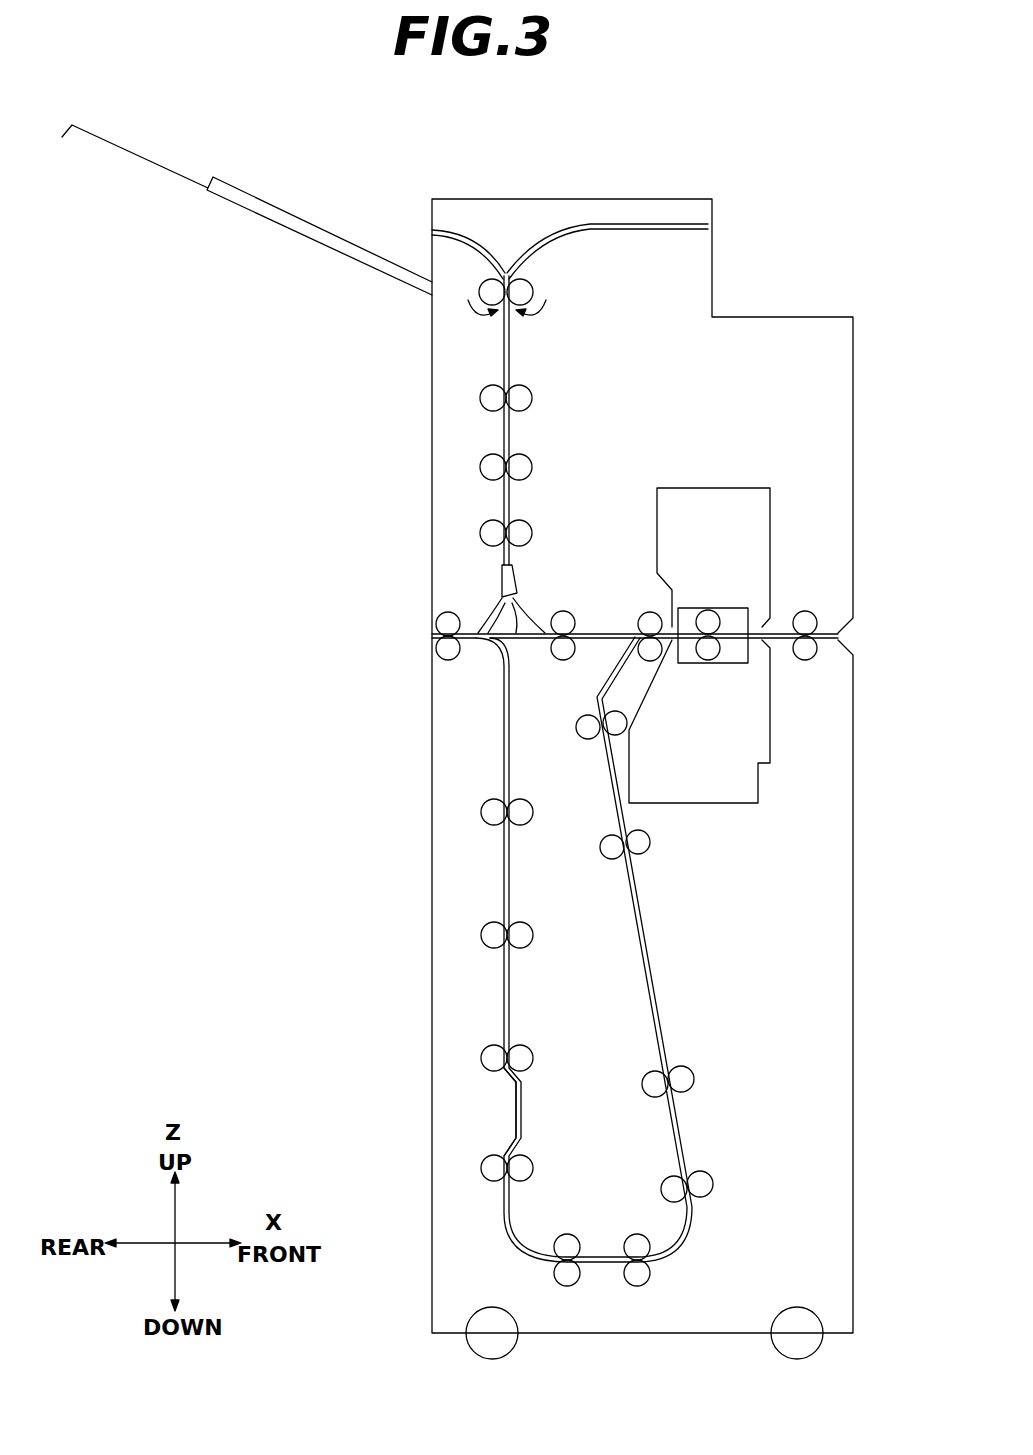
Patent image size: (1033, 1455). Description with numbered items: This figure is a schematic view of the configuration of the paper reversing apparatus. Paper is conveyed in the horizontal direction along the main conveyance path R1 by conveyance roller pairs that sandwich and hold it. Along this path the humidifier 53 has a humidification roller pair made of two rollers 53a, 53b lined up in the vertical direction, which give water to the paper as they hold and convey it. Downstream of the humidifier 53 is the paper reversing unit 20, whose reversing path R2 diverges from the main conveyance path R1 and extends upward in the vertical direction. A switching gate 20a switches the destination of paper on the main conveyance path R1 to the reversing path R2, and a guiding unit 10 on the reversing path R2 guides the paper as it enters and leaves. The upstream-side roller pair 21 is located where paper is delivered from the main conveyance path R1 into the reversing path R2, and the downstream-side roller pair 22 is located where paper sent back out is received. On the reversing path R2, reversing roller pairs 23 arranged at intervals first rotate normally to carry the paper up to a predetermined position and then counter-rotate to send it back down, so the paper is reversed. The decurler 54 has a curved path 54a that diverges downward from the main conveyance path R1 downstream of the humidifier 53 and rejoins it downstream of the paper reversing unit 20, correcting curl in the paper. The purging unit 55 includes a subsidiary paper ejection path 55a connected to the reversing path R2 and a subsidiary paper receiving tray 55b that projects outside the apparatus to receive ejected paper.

The guiding unit 10 is at (513, 586).
The paper reversing unit 20 is at (486, 361).
The switching gate 20a is at (520, 630).
The upstream-side roller pair 21 is at (568, 616).
The downstream-side roller pair 22 is at (437, 612).
The reversing roller pairs 23 is at (525, 283).
The humidifier 53 is at (707, 625).
The humidification roller 53a is at (712, 612).
The humidification roller 53b is at (712, 660).
The decurler 54 is at (500, 998).
The curved path 54a is at (512, 1110).
The purging unit 55 is at (385, 202).
The subsidiary paper ejection path 55a is at (570, 214).
The subsidiary paper receiving tray 55b is at (300, 222).
The main conveyance path R1 is at (600, 627).
The reversing path R2 is at (516, 352).